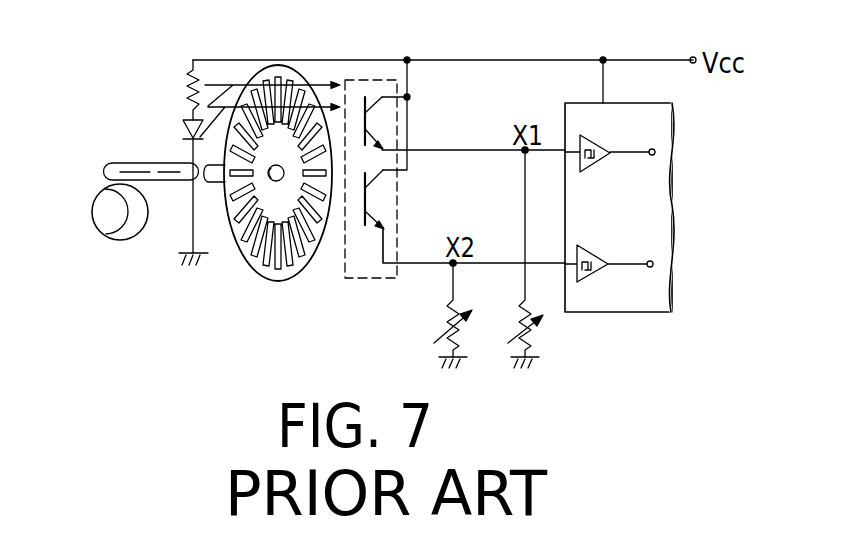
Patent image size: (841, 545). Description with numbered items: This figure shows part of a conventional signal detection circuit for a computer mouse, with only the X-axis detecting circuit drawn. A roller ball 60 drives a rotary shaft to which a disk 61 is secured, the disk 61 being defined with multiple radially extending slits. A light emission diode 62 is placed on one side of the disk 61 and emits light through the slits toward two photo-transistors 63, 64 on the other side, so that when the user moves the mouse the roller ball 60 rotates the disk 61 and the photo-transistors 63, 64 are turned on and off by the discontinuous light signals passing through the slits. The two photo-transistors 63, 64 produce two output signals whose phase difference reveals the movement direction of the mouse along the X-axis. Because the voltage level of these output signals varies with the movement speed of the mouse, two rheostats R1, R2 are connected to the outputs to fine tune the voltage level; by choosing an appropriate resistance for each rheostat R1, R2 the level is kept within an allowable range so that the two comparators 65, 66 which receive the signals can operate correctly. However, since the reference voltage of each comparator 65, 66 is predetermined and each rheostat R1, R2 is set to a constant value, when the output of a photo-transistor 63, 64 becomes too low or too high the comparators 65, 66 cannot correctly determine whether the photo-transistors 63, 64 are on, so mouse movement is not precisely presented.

The roller ball 60 is at (101, 232).
The disk 61 is at (278, 275).
The light emission diode 62 is at (186, 131).
The photo-transistor 63 is at (377, 100).
The photo-transistor 64 is at (373, 192).
The comparator 65 is at (600, 146).
The comparator 66 is at (592, 258).
The rheostat R1 is at (538, 259).
The rheostat R2 is at (439, 315).